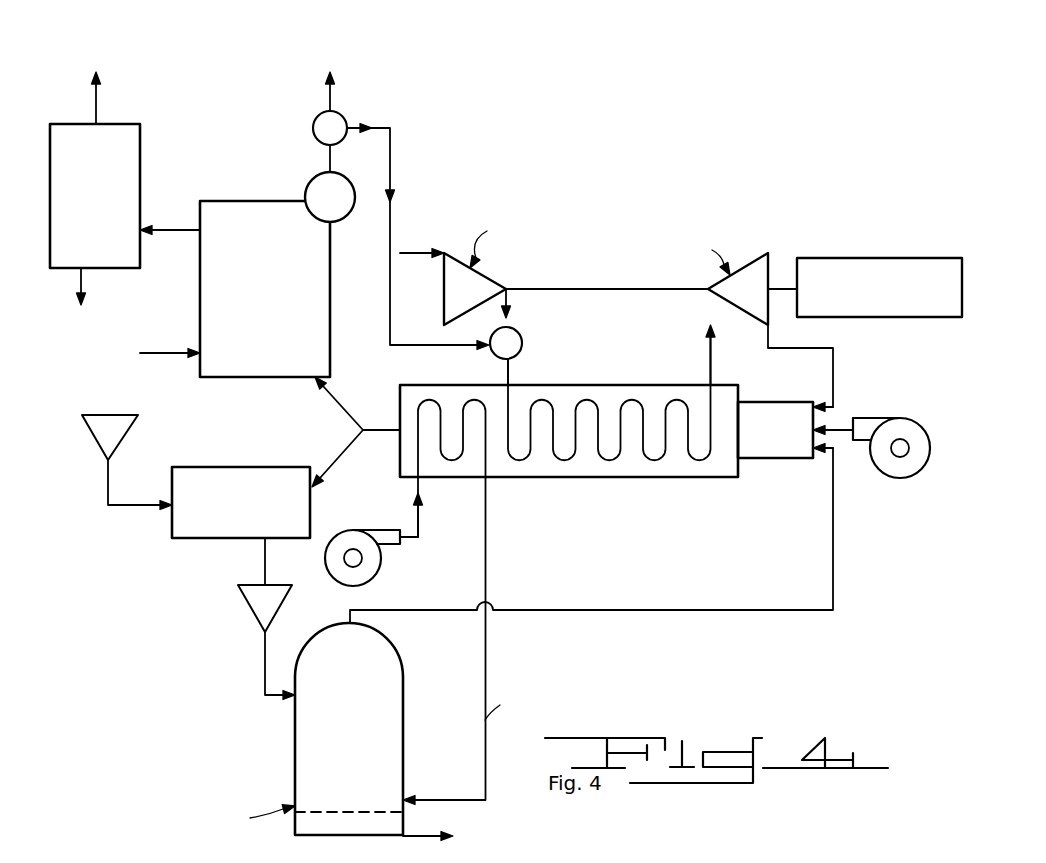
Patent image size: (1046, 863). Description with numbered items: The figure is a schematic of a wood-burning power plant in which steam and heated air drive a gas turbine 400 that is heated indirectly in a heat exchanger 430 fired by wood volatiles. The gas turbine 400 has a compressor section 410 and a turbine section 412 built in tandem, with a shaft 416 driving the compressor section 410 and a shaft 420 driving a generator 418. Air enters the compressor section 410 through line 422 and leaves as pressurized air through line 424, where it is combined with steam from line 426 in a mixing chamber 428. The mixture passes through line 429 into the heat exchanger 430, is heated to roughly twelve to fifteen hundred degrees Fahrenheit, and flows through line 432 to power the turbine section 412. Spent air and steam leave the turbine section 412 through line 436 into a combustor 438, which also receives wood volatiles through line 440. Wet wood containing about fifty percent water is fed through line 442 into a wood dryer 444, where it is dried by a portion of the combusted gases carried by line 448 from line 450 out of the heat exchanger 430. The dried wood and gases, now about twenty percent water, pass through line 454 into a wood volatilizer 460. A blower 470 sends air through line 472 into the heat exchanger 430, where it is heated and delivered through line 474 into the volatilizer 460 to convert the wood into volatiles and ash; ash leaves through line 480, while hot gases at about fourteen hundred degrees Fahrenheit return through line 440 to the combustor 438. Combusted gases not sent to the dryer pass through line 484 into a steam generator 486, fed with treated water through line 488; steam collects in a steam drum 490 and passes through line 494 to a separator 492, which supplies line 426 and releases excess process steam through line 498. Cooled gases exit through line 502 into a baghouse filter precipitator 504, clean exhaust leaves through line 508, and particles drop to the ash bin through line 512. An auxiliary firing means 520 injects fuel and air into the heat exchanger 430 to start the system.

The gas turbine 400 is at (625, 276).
The compressor section 410 is at (500, 284).
The turbine section 412 is at (748, 262).
The shaft 416 is at (670, 288).
The generator 418 is at (860, 258).
The shaft 420 is at (800, 365).
The line 422 is at (410, 254).
The line 424 is at (511, 320).
The line 426 is at (426, 346).
The mixing chamber 428 is at (522, 347).
The line 429 is at (508, 372).
The heat exchanger 430 is at (632, 385).
The line 432 is at (708, 360).
The line 436 is at (833, 375).
The combustor 438 is at (782, 402).
The line 440 is at (833, 575).
The line 442 is at (148, 508).
The wood dryer 444 is at (195, 467).
The line 448 is at (330, 465).
The line 450 is at (385, 429).
The line 454 is at (265, 565).
The wood volatilizer 460 is at (403, 688).
The blower 470 is at (382, 560).
The line 472 is at (418, 530).
The line 474 is at (487, 548).
The line 480 is at (420, 840).
The line 484 is at (333, 395).
The steam generator 486 is at (200, 320).
The line 488 is at (170, 352).
The steam drum 490 is at (306, 192).
The separator 492 is at (342, 115).
The line 494 is at (330, 158).
The line 498 is at (317, 118).
The line 502 is at (170, 230).
The baghouse filter precipitator 504 is at (140, 150).
The line 508 is at (96, 100).
The line 512 is at (86, 287).
The auxiliary firing means 520 is at (878, 420).